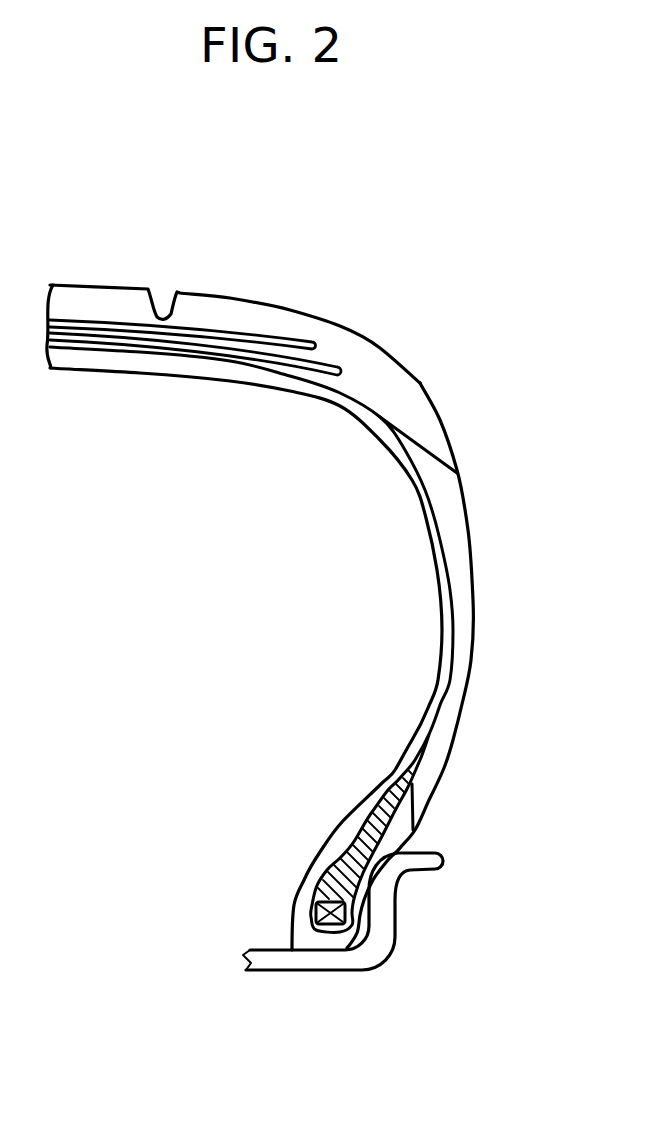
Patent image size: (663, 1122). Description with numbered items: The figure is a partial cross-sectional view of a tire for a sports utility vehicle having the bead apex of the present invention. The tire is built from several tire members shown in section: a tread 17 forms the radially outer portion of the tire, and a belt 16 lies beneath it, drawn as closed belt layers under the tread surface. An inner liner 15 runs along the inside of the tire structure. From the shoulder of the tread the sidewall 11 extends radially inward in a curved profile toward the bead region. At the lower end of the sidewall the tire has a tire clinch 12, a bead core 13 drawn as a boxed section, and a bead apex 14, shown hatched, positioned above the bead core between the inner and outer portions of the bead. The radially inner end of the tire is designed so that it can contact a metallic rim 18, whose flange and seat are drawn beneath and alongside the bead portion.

The sidewall 11 is at (462, 587).
The tire clinch 12 is at (397, 833).
The bead core 13 is at (316, 914).
The bead apex 14 is at (338, 858).
The inner liner 15 is at (277, 378).
The belt 16 is at (173, 332).
The tread 17 is at (232, 305).
The metallic rim 18 is at (311, 962).